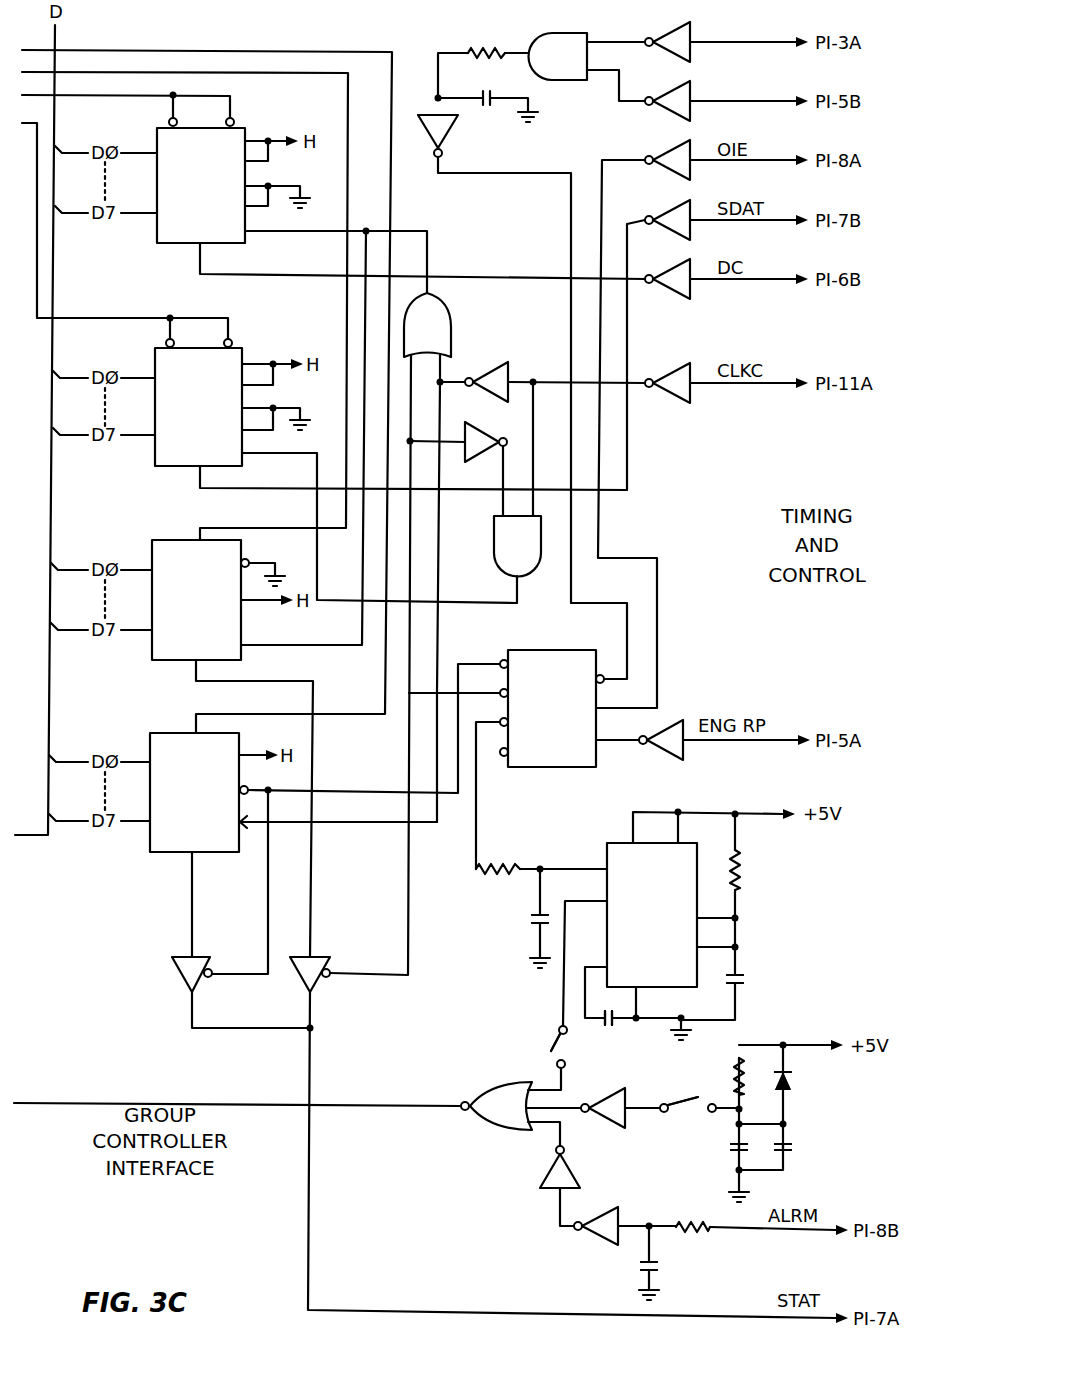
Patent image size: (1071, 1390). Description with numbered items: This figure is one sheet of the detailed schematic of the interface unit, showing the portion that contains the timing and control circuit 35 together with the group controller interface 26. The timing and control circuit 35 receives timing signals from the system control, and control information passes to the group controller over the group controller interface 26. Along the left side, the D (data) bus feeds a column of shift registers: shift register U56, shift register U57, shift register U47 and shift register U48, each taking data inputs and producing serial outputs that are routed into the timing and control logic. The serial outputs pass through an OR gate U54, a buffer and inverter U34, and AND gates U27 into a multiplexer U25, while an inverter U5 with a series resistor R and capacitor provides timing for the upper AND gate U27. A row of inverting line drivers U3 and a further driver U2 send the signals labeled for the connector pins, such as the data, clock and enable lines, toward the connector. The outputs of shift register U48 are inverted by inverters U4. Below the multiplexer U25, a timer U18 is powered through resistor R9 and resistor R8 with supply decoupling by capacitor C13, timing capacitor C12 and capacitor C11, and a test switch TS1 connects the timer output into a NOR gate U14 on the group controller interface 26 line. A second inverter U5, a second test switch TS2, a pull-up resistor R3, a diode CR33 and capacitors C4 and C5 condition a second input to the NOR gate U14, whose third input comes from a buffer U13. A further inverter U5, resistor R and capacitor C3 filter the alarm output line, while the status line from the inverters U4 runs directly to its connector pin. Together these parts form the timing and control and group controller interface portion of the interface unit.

The timing and control circuit 35 is at (816, 601).
The group controller interface 26 is at (159, 1198).
The shift register U56 is at (201, 186).
The shift register U57 is at (198, 407).
The shift register U47 is at (196, 600).
The shift register U48 is at (194, 792).
The inverter U4 is at (250, 971).
The OR gate U54 is at (427, 325).
The buffer/inverter U34 is at (482, 411).
The AND gate U27 is at (540, 305).
The inverter U5 is at (521, 687).
The inverting line driver U3 is at (671, 224).
The inverting line driver U2 is at (665, 747).
The multiplexer U25 is at (552, 708).
The timer U18 is at (652, 915).
The resistor R9 is at (498, 854).
The resistor R8 is at (750, 870).
The resistor R3 is at (724, 1076).
The resistor R is at (589, 626).
The capacitor C13 is at (520, 923).
The capacitor C12 is at (756, 981).
The capacitor C11 is at (614, 1028).
The capacitor C3 is at (663, 1266).
The capacitor C4 is at (723, 1146).
The capacitor C5 is at (798, 1146).
The diode CR33 is at (810, 1081).
The test switch TS1 is at (536, 1043).
The test switch TS2 is at (683, 1090).
The NOR gate U14 is at (501, 1106).
The buffer U13 is at (541, 1171).